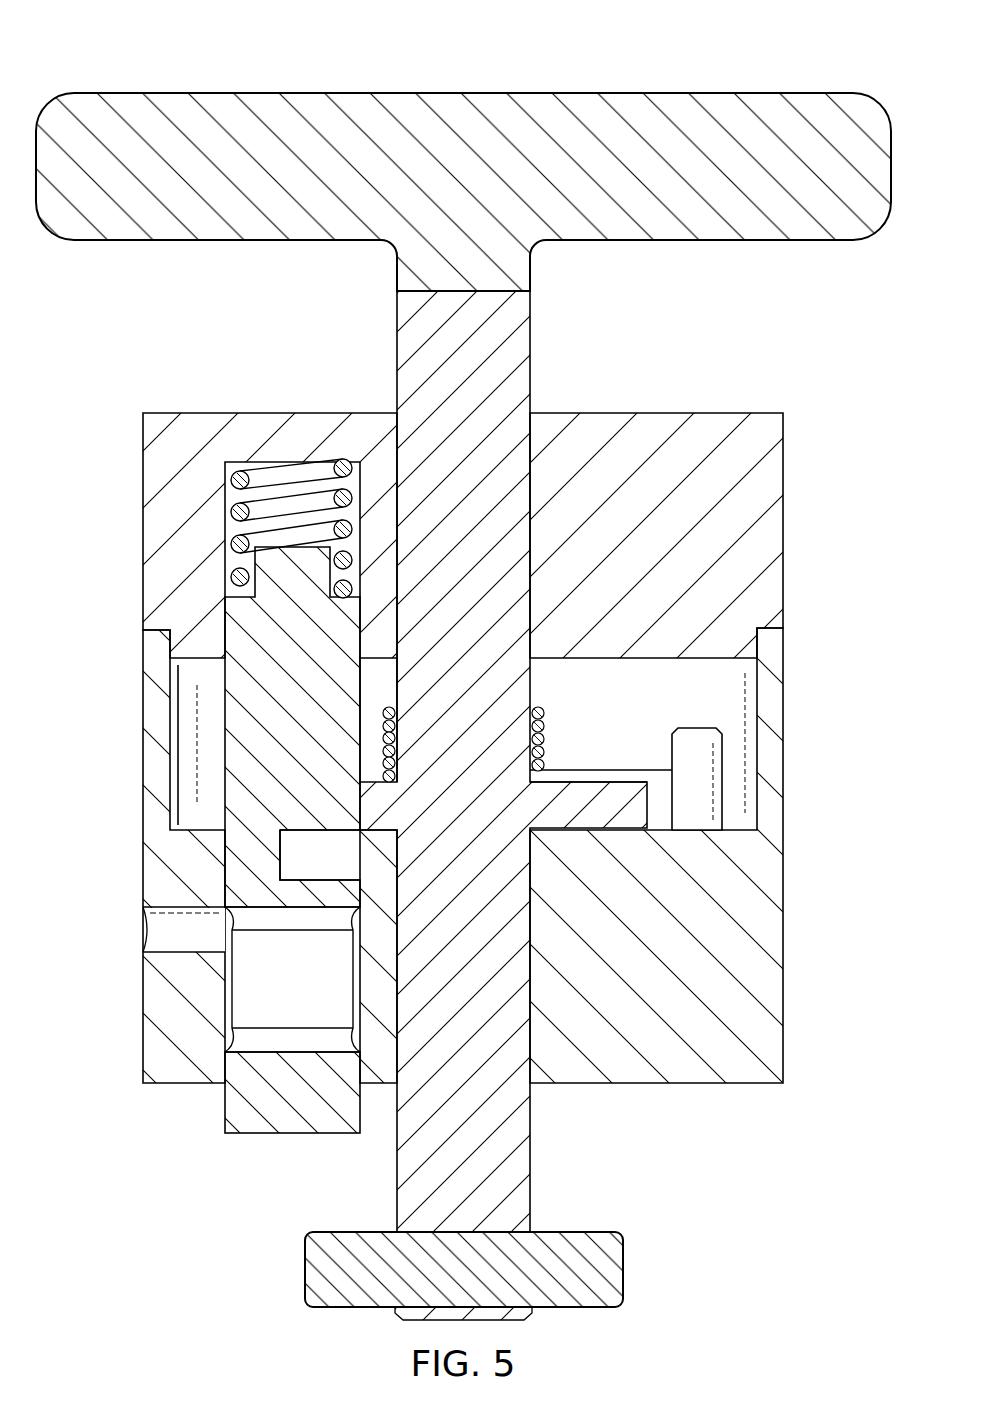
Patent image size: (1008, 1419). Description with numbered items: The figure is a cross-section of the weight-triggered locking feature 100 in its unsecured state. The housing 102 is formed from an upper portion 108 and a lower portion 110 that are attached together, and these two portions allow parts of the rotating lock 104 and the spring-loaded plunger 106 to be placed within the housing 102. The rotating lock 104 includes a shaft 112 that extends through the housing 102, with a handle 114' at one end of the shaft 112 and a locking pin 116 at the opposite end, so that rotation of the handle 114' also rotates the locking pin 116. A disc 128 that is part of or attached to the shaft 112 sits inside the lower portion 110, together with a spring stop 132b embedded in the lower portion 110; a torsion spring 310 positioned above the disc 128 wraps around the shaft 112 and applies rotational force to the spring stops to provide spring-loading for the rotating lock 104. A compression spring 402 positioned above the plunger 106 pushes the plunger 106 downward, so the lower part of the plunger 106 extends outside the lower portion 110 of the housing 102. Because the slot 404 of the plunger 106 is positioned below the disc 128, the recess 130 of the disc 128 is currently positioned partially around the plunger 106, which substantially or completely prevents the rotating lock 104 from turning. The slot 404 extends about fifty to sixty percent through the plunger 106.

The locking feature 100 is at (152, 52).
The housing 102 is at (517, 748).
The rotating lock 104 is at (635, 69).
The spring-loaded plunger 106 is at (292, 867).
The upper portion 108 is at (778, 474).
The lower portion 110 is at (780, 989).
The shaft 112 is at (516, 805).
The handle 114' is at (200, 268).
The locking pin 116 is at (592, 1308).
The disc 128 is at (618, 792).
The recess 130 is at (360, 790).
The spring stop 132b is at (698, 728).
The torsion spring 310 is at (548, 712).
The compression spring 402 is at (270, 477).
The slot 404 is at (303, 868).